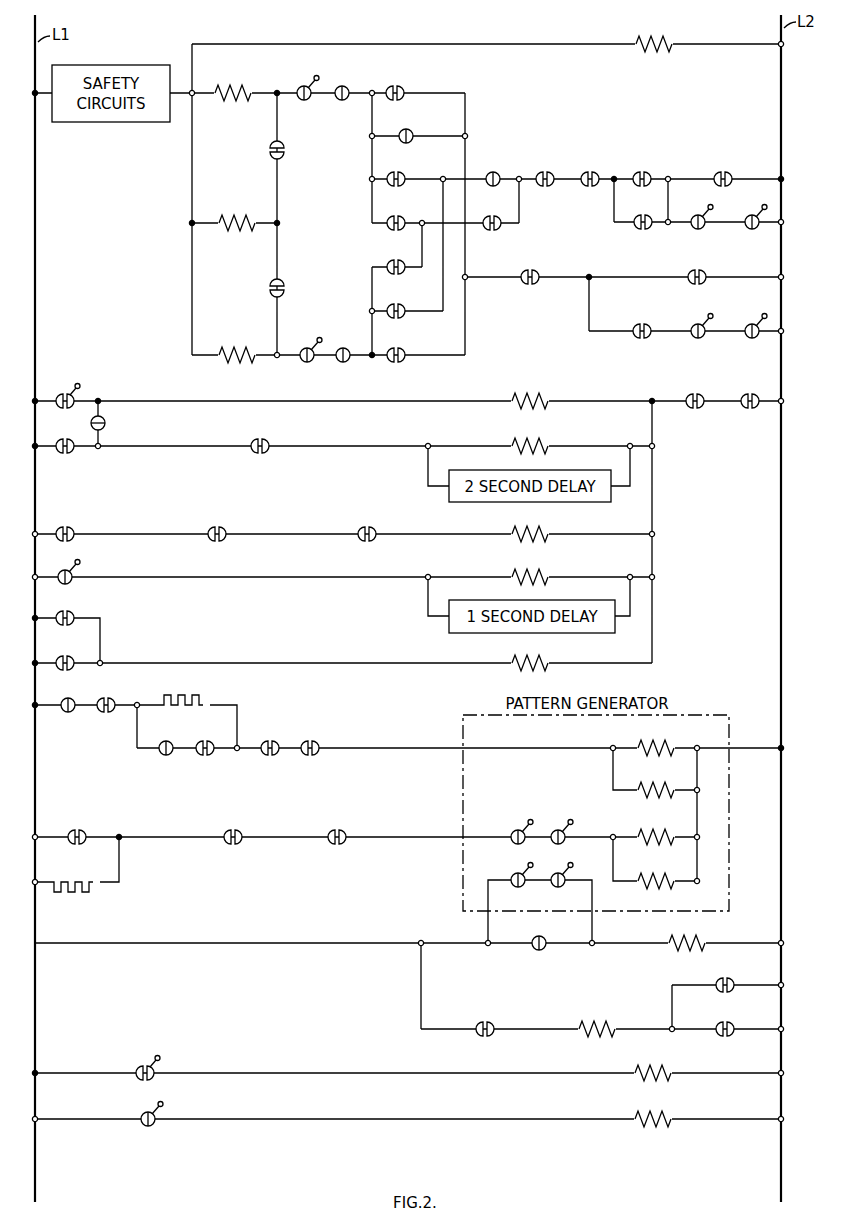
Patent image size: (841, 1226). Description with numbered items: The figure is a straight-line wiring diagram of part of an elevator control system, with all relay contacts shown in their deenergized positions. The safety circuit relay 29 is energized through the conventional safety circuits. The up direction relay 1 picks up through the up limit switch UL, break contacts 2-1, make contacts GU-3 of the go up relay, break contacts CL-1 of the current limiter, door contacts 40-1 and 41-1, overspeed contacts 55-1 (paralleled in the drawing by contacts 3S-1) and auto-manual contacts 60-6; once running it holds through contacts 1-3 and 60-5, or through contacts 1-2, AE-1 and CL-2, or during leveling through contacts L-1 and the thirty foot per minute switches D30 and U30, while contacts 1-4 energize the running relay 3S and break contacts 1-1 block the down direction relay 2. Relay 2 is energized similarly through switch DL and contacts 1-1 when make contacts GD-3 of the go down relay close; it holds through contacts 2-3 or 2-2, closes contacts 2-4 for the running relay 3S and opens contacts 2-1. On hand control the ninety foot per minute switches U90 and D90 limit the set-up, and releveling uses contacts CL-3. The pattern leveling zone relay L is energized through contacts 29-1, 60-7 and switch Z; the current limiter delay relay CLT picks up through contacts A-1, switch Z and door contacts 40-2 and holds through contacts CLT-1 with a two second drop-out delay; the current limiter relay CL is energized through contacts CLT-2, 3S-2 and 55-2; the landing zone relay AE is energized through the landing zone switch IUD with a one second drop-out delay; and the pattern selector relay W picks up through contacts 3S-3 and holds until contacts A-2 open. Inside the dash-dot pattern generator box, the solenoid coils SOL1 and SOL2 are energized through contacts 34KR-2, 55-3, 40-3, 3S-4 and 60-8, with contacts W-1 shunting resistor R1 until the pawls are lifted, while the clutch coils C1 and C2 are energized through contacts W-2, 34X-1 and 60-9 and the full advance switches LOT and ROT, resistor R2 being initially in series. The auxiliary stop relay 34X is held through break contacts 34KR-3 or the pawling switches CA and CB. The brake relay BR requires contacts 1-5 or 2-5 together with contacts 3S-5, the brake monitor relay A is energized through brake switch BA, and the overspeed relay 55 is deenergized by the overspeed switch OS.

The safety circuit relay 29 is at (672, 40).
The up direction relay 1 is at (222, 82).
The up limit switch UL is at (294, 84).
The break contacts of down direction relay 2-1 is at (344, 84).
The make contacts of up direction relay 1-2 is at (402, 84).
The make contacts of up direction relay 1-4 is at (283, 147).
The contacts of current limiter relay CL-3 is at (405, 129).
The make contacts of go up relay GU-3 is at (401, 172).
The break contacts of current limiter relay CL-1 is at (500, 165).
The make contacts of car door signal 40-1 is at (546, 172).
The make contacts of hatch door signal 41-1 is at (593, 172).
The contact 3S-1 is at (646, 172).
The contacts of auto-manual relay 60-6 is at (728, 172).
The running relay 3S is at (234, 210).
The holding contacts of up direction relay 1-3 is at (401, 216).
The contacts of auto-manual relay 60-5 is at (486, 216).
The make contacts of down direction relay 2-3 is at (392, 260).
The contacts of go down relay GD-3 is at (398, 304).
The make contacts of down direction relay 2-4 is at (285, 285).
The down direction relay 2 is at (224, 342).
The down limit switch DL is at (302, 364).
The break contacts of up direction relay 1-1 is at (342, 363).
The make contacts of down direction relay 2-2 is at (402, 362).
The contacts of landing zone relay AE-1 is at (522, 272).
The contacts of current limiter relay CL-2 is at (706, 282).
The contacts of overspeed relay 55-1 is at (636, 228).
The 90 foot per minute down switch D90 is at (692, 228).
The 90 foot per minute up switch U90 is at (750, 228).
The contacts of pattern leveling zone relay L-1 is at (646, 340).
The 30 foot per minute down switch D30 is at (694, 338).
The 30 foot per minute up switch U30 is at (750, 338).
The pattern leveling zone switch Z is at (62, 388).
The contacts of brake monitor relay A-1 is at (105, 423).
The contacts of current limiter delay relay CLT-1 is at (72, 454).
The contacts of car door signal 40-2 is at (266, 442).
The pattern leveling zone relay L is at (514, 388).
The contacts of safety circuit relay 29-1 is at (694, 408).
The contacts of auto-manual relay 60-7 is at (749, 408).
The current limiter delay relay CLT is at (544, 438).
The make contacts of current limiter delay relay CLT-2 is at (76, 526).
The contacts of running relay 3S-2 is at (222, 526).
The contact 55-2 is at (364, 526).
The current limiter relay CL is at (546, 528).
The landing zone switch IUD is at (82, 569).
The landing zone relay AE is at (548, 568).
The contacts of running relay 3S-3 is at (74, 614).
The contacts of brake monitor relay A-2 is at (74, 670).
The pattern selector relay W is at (544, 660).
The contacts of stop signal 34KR-2 is at (64, 714).
The contacts of overspeed relay 55-3 is at (114, 702).
The resistor R1 is at (198, 698).
The contacts of pattern selector relay W-1 is at (160, 756).
The contacts of auto-manual relay 60-8 is at (204, 756).
The contacts of car door signal 40-3 is at (268, 740).
The contacts of running relay 3S-4 is at (318, 740).
The contacts of pattern selector relay W-2 is at (74, 830).
The contacts of auxiliary stop relay 34X-1 is at (230, 844).
The contacts of auto-manual relay 60-9 is at (336, 844).
The resistor R2 is at (84, 894).
The solenoid No. 1 coil SOL1 is at (636, 742).
The solenoid No. 2 coil SOL2 is at (634, 794).
The left full advance switch LOT is at (510, 828).
The right full advance switch ROT is at (556, 824).
The clutch coil No. 1 C1 is at (670, 834).
The clutch coil No. 2 C2 is at (668, 874).
The A lane pawling switch CA is at (510, 872).
The B lane pawling switch CB is at (564, 884).
The break contacts of stop signal 34KR-3 is at (532, 950).
The auxiliary stop relay 34X is at (700, 938).
The contacts of up direction relay 1-5 is at (730, 980).
The contacts of down direction relay 2-5 is at (730, 1022).
The contacts of running relay 3S-5 is at (480, 1024).
The brake relay BR is at (590, 1024).
The brake switch BA is at (136, 1068).
The brake monitor relay A is at (664, 1068).
The overspeed switch OS is at (138, 1114).
The overspeed relay 55 is at (664, 1114).